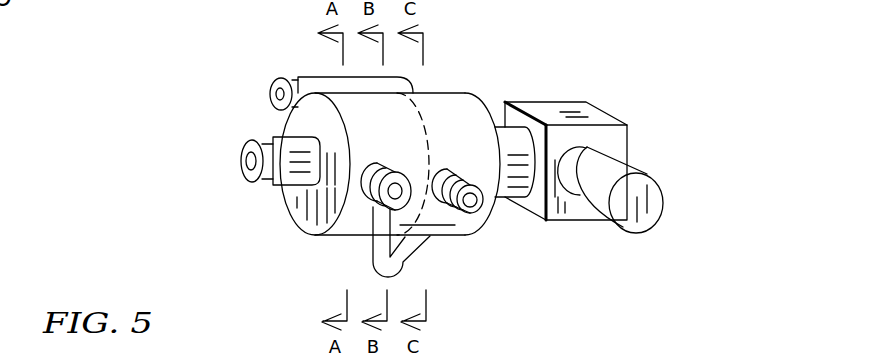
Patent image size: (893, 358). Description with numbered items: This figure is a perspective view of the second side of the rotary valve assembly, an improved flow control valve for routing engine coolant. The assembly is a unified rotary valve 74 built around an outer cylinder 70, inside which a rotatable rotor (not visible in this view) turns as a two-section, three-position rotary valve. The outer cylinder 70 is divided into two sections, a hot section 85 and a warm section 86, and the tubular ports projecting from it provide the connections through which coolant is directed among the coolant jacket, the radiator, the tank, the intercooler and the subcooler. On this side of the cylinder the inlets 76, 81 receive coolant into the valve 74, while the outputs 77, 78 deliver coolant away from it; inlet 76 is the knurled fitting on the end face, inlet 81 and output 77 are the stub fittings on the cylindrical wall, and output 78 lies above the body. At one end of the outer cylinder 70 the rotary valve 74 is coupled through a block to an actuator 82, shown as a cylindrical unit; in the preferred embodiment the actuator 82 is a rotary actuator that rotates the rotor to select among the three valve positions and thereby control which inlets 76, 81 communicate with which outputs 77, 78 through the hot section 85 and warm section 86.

The outer cylinder 70 is at (347, 236).
The rotary valve 74 is at (561, 58).
The inlet 76 is at (292, 187).
The output 77 is at (363, 170).
The output 78 is at (198, 6).
The inlet 81 is at (470, 202).
The actuator 82 is at (628, 210).
The hot section 85 is at (353, 110).
The warm section 86 is at (437, 220).